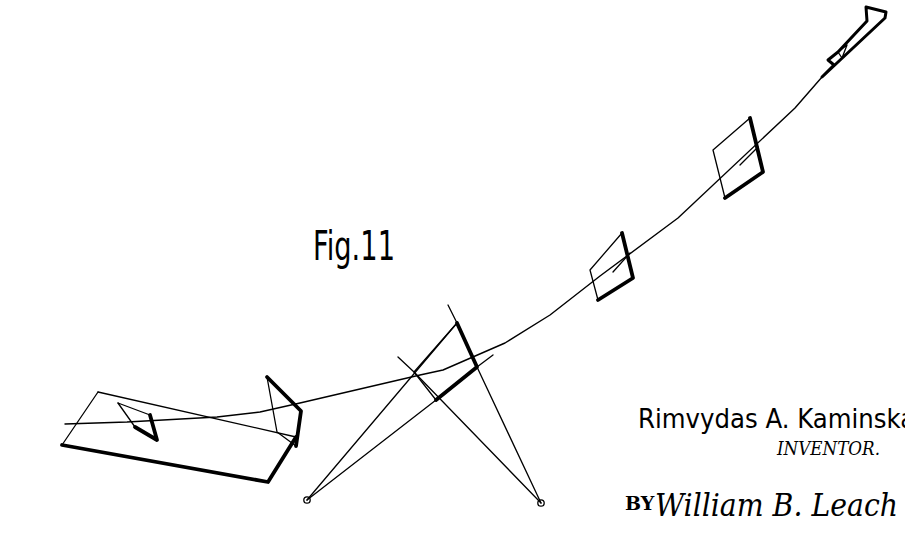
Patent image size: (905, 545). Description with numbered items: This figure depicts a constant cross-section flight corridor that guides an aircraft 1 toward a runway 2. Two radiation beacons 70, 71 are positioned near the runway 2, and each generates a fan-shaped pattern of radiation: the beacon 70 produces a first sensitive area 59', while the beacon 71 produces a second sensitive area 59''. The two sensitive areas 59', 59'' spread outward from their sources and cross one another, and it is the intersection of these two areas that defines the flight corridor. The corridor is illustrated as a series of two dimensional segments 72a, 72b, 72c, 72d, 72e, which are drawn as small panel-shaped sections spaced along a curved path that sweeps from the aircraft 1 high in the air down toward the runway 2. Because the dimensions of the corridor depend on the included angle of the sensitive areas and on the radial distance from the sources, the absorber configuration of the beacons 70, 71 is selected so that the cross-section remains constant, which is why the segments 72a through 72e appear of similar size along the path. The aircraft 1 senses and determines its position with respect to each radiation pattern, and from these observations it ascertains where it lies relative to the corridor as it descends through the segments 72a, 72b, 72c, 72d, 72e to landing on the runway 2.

The aircraft 1 is at (852, 39).
The runway 2 is at (235, 463).
The first sensitive area 59' is at (400, 411).
The second sensitive area 59'' is at (488, 404).
The radiation beacon 70 is at (313, 501).
The radiation beacon 71 is at (545, 500).
The two dimensional corridor segment 72a is at (738, 134).
The two dimensional corridor segment 72b is at (617, 250).
The two dimensional corridor segment 72c is at (428, 365).
The two dimensional corridor segment 72d is at (290, 408).
The two dimensional corridor segment 72e is at (131, 410).